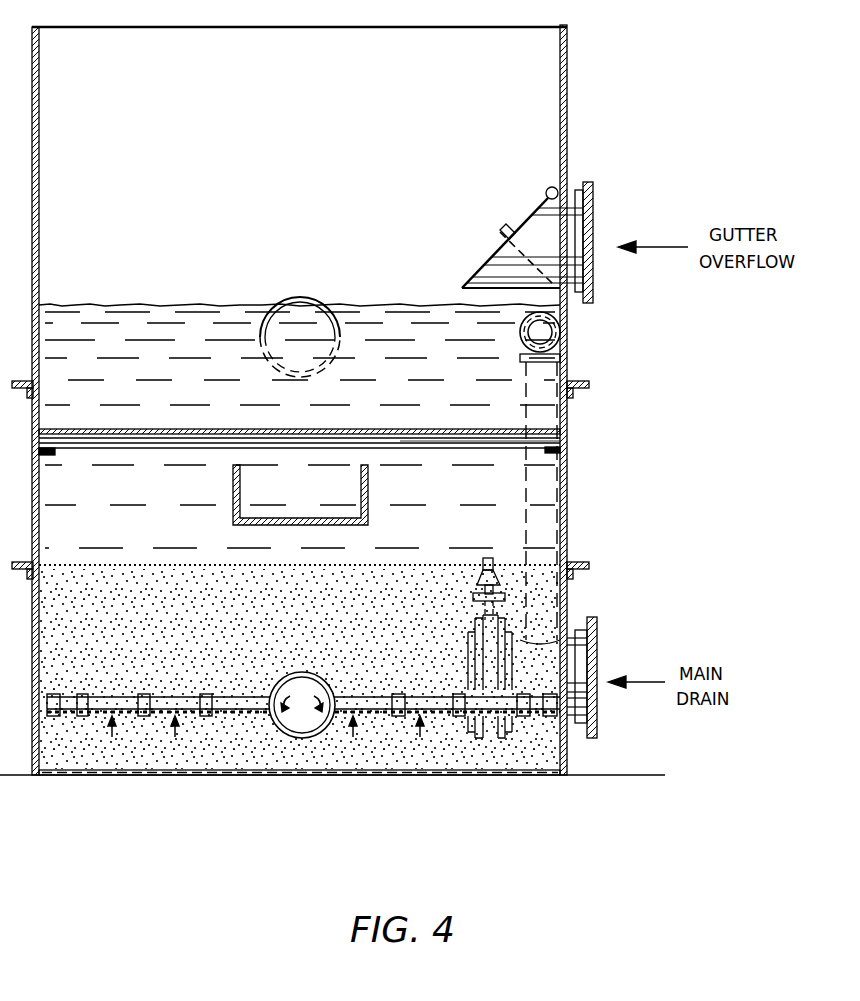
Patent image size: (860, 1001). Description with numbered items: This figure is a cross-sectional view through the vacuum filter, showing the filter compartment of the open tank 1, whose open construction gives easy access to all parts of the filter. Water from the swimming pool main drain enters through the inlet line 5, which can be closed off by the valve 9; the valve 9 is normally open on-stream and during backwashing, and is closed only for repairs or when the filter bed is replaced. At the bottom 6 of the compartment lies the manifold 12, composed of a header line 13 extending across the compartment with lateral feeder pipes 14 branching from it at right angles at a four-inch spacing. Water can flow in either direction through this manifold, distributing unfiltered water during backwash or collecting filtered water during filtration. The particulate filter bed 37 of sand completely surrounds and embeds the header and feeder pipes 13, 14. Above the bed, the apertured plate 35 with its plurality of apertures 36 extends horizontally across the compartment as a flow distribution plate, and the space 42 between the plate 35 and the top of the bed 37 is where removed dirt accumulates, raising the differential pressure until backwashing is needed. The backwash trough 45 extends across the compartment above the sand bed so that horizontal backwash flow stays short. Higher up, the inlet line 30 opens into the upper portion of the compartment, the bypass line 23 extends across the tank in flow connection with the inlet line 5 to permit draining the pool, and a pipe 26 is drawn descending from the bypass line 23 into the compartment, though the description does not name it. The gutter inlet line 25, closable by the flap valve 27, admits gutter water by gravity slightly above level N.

The open tank 1 is at (568, 78).
The inlet line 5 is at (578, 692).
The bottom of the compartment 6 is at (497, 776).
The valve 9 is at (497, 722).
The manifold 12 is at (365, 662).
The header line 13 is at (313, 676).
The lateral feeder pipes 14 is at (178, 697).
The bypass line 23 is at (545, 332).
The inlet line 25 is at (575, 235).
The downpipe 26 is at (526, 518).
The flap valve 27 is at (496, 240).
The inlet line 30 is at (300, 297).
The apertured plate 35 is at (168, 428).
The apertures 36 is at (497, 428).
The particulate filter bed 37 is at (231, 623).
The space 42 is at (312, 562).
The backwash trough 45 is at (233, 497).